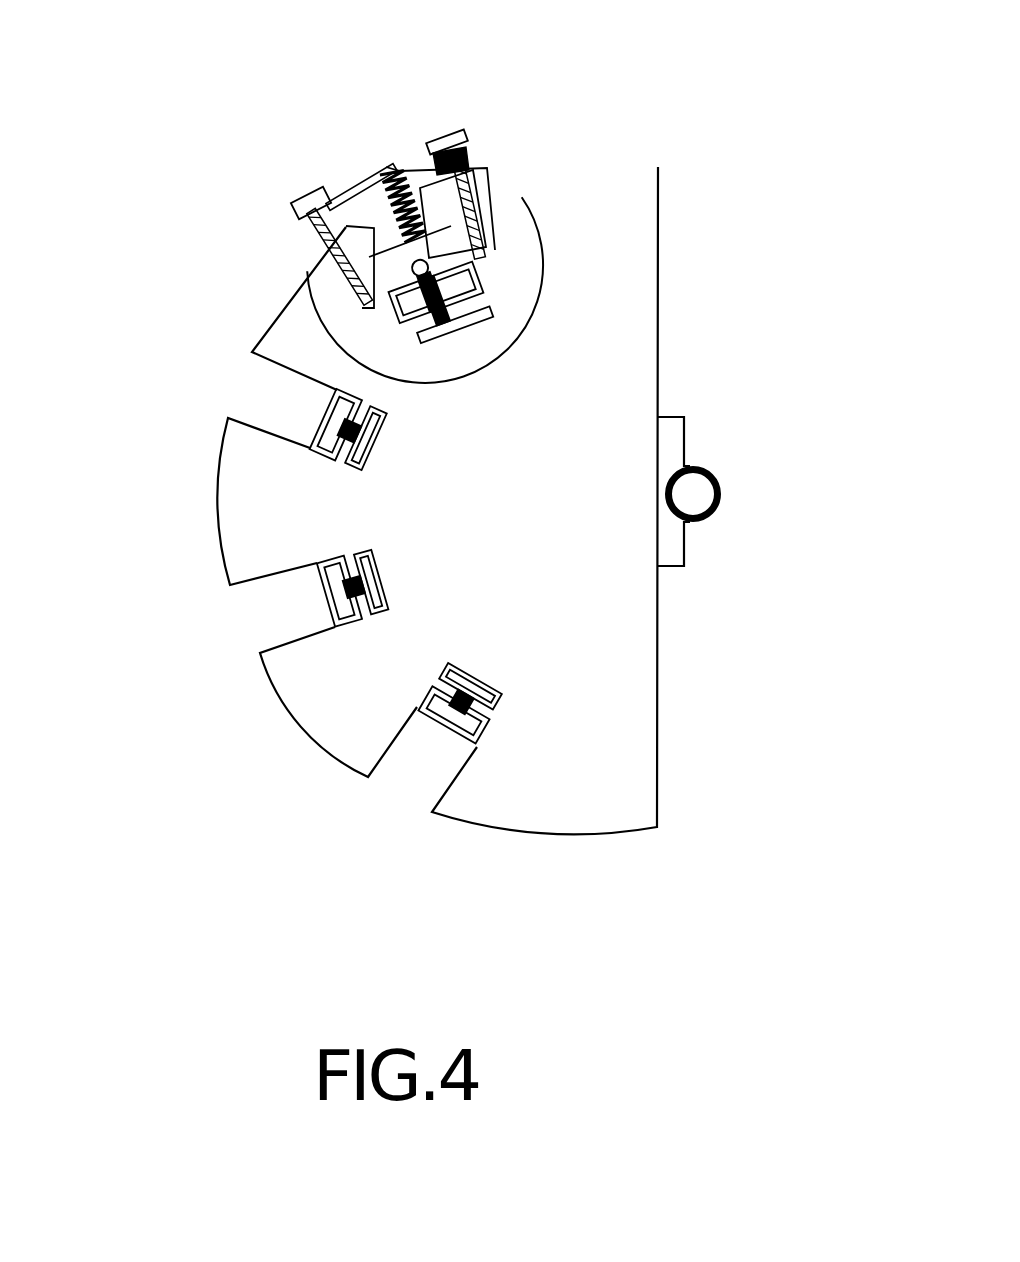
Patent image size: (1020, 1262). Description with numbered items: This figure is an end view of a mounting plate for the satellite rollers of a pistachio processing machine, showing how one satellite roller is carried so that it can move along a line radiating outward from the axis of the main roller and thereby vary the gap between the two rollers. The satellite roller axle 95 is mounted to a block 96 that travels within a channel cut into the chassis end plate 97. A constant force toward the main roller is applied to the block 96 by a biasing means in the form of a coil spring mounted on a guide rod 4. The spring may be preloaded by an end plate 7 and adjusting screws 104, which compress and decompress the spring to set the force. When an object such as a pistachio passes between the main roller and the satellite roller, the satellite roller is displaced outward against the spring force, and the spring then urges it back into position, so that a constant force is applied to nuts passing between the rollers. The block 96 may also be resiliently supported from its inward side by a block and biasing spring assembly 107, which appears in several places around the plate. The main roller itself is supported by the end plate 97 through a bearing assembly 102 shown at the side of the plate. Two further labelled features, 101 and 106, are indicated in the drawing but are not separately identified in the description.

The guide rod 4 is at (370, 228).
The end plate 7 is at (352, 181).
The satellite roller axles 95 is at (491, 238).
The blocks 96 is at (477, 263).
The chassis end plates 97 is at (551, 522).
The spring 101 is at (397, 167).
The bearing assemblies 102 is at (714, 448).
The adjusting screws 104 is at (473, 137).
The rotor body 106 is at (440, 398).
The block and biasing spring assembly 107 is at (390, 340).